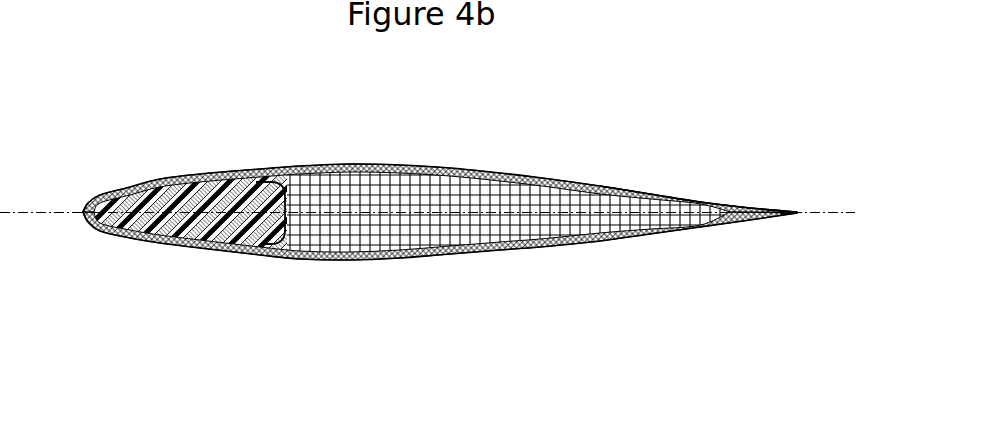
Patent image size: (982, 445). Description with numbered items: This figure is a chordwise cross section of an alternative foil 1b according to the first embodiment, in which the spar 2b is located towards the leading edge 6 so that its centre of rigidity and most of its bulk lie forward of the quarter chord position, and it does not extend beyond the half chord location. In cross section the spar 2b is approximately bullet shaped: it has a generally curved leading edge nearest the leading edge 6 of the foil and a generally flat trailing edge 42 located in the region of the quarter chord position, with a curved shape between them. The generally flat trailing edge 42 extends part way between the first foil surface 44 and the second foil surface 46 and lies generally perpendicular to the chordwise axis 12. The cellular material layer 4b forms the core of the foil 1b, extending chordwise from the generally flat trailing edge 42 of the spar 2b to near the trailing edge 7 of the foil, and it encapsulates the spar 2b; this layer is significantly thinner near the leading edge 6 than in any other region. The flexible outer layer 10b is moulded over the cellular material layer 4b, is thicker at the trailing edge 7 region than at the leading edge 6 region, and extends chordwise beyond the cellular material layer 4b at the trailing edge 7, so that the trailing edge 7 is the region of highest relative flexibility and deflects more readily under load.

The foil 1b is at (132, 151).
The spar 2b is at (270, 203).
The cellular material layer 4b is at (402, 183).
The leading edge 6 is at (83, 216).
The trailing edge 7 is at (797, 213).
The flexible outer layer 10b is at (663, 203).
The chordwise axis 12 is at (823, 212).
The generally flat trailing edge 42 is at (282, 237).
The first foil surface 44 is at (205, 173).
The second foil surface 46 is at (217, 258).